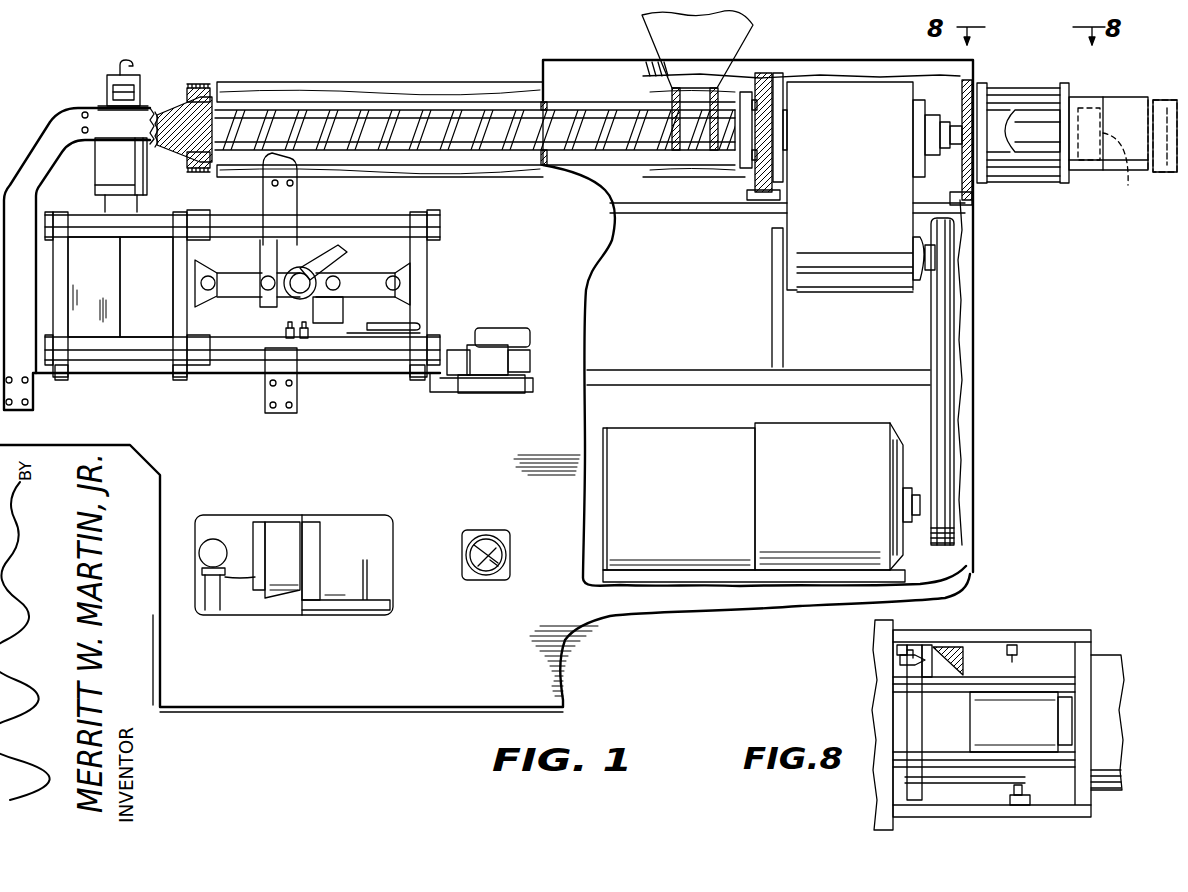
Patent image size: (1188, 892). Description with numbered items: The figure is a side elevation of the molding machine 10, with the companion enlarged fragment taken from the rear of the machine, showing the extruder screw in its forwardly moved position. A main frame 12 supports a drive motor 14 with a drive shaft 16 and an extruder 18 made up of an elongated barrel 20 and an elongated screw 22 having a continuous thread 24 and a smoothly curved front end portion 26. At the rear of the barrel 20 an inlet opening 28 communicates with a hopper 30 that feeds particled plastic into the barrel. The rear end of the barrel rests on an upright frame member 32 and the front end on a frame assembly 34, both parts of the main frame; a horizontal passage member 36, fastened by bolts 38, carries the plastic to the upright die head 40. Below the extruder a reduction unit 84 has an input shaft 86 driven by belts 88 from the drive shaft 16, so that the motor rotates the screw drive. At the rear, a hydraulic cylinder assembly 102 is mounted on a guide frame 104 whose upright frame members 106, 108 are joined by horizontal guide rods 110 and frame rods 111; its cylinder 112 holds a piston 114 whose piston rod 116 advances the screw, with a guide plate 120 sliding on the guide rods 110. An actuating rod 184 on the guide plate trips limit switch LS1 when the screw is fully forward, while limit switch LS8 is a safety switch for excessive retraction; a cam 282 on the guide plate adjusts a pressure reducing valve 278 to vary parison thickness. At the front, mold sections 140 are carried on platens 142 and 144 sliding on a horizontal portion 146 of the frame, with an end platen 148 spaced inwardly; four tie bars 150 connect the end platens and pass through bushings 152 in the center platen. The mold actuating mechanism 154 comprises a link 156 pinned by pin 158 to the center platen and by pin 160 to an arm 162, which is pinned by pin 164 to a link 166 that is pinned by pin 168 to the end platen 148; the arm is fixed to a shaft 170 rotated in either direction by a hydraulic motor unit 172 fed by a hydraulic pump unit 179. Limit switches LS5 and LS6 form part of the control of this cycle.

In FIG. 1, the molding machine 10 is at (980, 468).
In FIG. 1, the main frame 12 is at (965, 565).
In FIG. 1, the drive motor 14 is at (805, 499).
In FIG. 1, the drive shaft 16 is at (905, 507).
In FIG. 1, the extruder 18 is at (452, 80).
In FIG. 1, the barrel 20 is at (268, 108).
In FIG. 1, the screw 22 is at (345, 125).
In FIG. 1, the continuous thread 24 is at (405, 108).
In FIG. 1, the front end portion 26 is at (166, 112).
In FIG. 1, the inlet opening 28 is at (712, 120).
In FIG. 1, the hopper 30 is at (744, 32).
In FIG. 1, the upright frame member 32 is at (768, 198).
In FIG. 1, the frame assembly 34 is at (45, 143).
In FIG. 1, the passage member 36 is at (176, 146).
In FIG. 1, the bolts 38 is at (192, 163).
In FIG. 1, the die head 40 is at (101, 68).
In FIG. 1, the reduction unit 84 is at (800, 257).
In FIG. 1, the input shaft 86 is at (925, 258).
In FIG. 1, the belts 88 is at (950, 338).
In FIG. 1, the hydraulic cylinder assembly 102 is at (1102, 98).
In FIG. 1, the guide frame 104 is at (1030, 80).
In FIG. 1, the upright frame member 106 is at (1067, 88).
In FIG. 1, the upright frame member 108 is at (987, 82).
In FIG. 1, the guide rods 110 is at (1015, 178).
In FIG. 1, the cylinder 112 is at (1085, 172).
In FIG. 1, the piston 114 is at (1128, 185).
In FIG. 1, the piston rod 116 is at (1032, 131).
In FIG. 1, the mold sections 140 is at (100, 290).
In FIG. 1, the platen 142 is at (57, 272).
In FIG. 1, the center platen 144 is at (180, 260).
In FIG. 1, the horizontal portion 146 is at (100, 423).
In FIG. 1, the end platen 148 is at (425, 287).
In FIG. 1, the tie bars 150 is at (345, 228).
In FIG. 1, the bushings 152 is at (200, 218).
In FIG. 1, the mold actuating mechanism 154 is at (354, 265).
In FIG. 1, the link 156 is at (240, 293).
In FIG. 1, the pin 158 is at (212, 291).
In FIG. 1, the pin 160 is at (266, 292).
In FIG. 1, the arm 162 is at (275, 265).
In FIG. 1, the pin 164 is at (333, 291).
In FIG. 1, the link 166 is at (360, 291).
In FIG. 1, the pin 168 is at (397, 282).
In FIG. 1, the shaft 170 is at (306, 290).
In FIG. 1, the hydraulic motor unit 172 is at (312, 246).
In FIG. 1, the hydraulic pump unit 179 is at (345, 557).
In FIG. 1, the limit switch LS5 is at (289, 334).
In FIG. 1, the limit switch LS6 is at (305, 338).
In FIG. 8, the frame rods 111 is at (1088, 634).
In FIG. 8, the guide plate 120 is at (912, 718).
In FIG. 8, the actuating rod 184 is at (900, 662).
In FIG. 8, the limit switch LS1 is at (905, 645).
In FIG. 8, the limit switch LS8 is at (1012, 645).
In FIG. 8, the cam 282 is at (1023, 786).
In FIG. 8, the pressure reducing valve 278 is at (1020, 805).